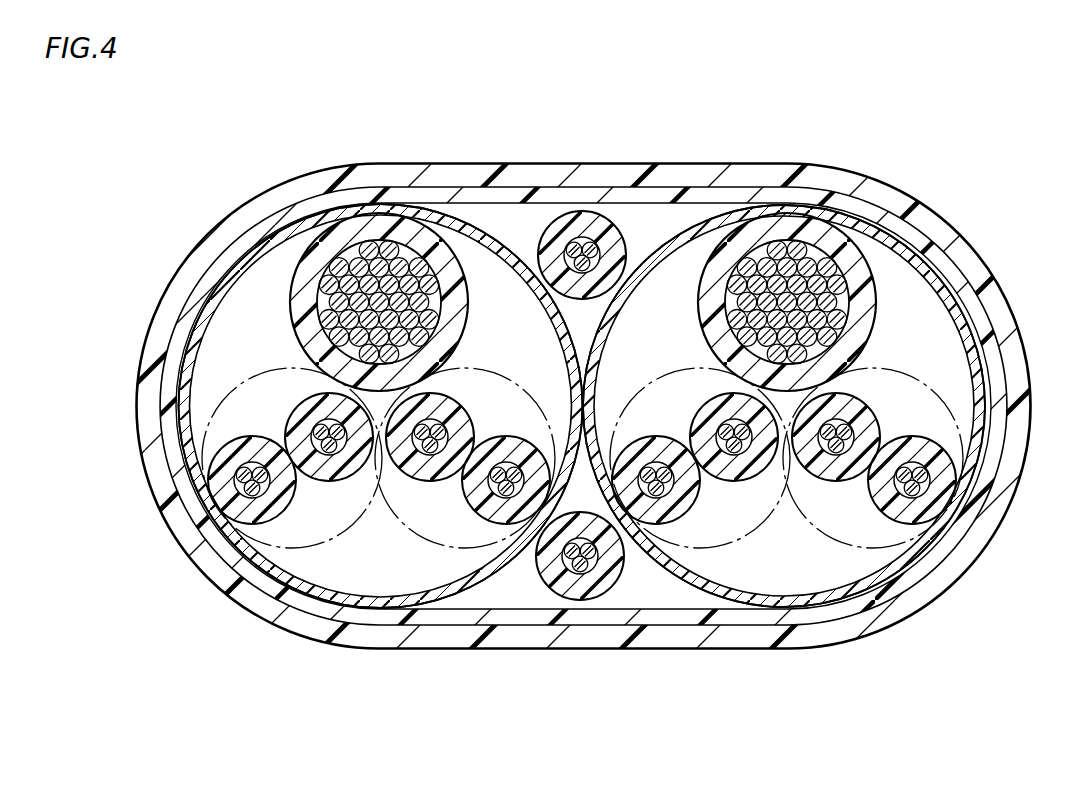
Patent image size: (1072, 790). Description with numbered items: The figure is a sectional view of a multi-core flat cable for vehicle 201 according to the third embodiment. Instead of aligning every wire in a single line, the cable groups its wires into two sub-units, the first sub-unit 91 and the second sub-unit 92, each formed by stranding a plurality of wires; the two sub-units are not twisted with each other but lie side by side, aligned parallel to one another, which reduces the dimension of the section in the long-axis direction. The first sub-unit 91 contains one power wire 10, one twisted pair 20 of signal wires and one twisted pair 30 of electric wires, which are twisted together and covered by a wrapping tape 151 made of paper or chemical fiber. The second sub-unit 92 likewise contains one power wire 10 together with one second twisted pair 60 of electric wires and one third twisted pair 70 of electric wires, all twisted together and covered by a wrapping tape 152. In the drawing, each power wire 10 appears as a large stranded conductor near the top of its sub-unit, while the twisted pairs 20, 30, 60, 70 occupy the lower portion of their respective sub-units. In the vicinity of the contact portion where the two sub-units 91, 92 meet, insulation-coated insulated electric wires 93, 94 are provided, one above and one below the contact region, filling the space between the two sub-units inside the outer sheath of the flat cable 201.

The multi-core flat cable for vehicle 201 is at (817, 126).
The power wire 10 is at (292, 262).
The first sub-unit 91 is at (486, 214).
The second sub-unit 92 is at (667, 222).
The wrapping tape 151 is at (410, 205).
The wrapping tape 152 is at (748, 207).
The insulated electric wire 93 is at (585, 209).
The insulated electric wire 94 is at (583, 603).
The twisted pair of signal wires 20 is at (315, 550).
The twisted pair of electric wires 30 is at (428, 550).
The second twisted pair of electric wires 60 is at (716, 550).
The third twisted pair of electric wires 70 is at (838, 548).